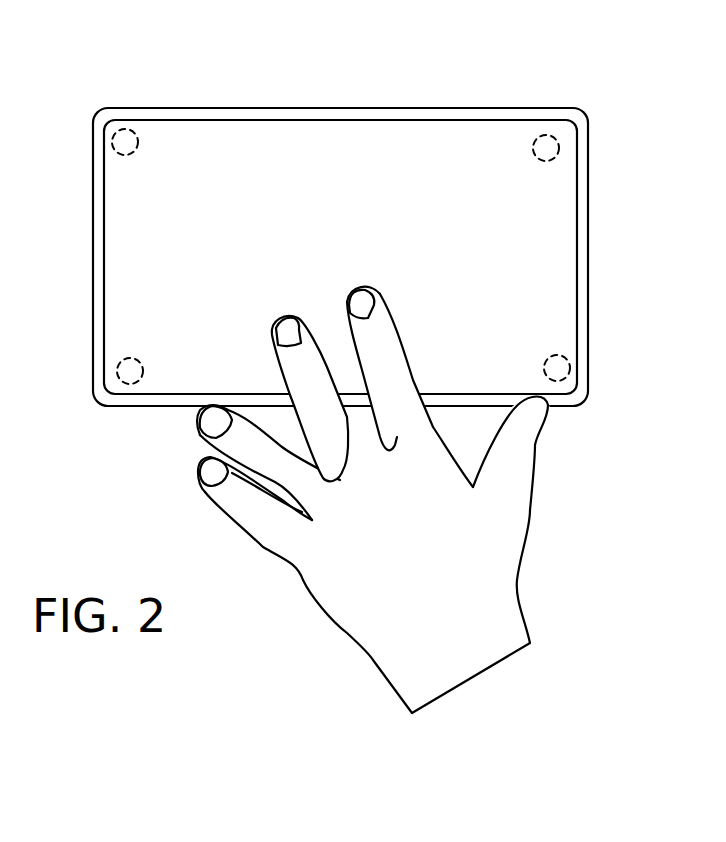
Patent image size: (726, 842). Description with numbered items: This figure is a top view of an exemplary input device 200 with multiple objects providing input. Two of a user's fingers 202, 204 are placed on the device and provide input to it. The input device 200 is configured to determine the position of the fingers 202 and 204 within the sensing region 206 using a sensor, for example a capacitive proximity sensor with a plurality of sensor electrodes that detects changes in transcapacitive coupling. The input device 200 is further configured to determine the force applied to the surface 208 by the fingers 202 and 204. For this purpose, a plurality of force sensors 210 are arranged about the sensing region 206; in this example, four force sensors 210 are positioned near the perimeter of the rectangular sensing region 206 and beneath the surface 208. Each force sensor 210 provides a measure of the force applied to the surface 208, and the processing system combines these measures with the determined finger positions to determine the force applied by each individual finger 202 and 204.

The input device 200 is at (122, 541).
The finger 202 is at (268, 335).
The finger 204 is at (372, 290).
The sensing region 206 is at (94, 234).
The surface 208 is at (224, 142).
The force sensors 210 is at (112, 140).